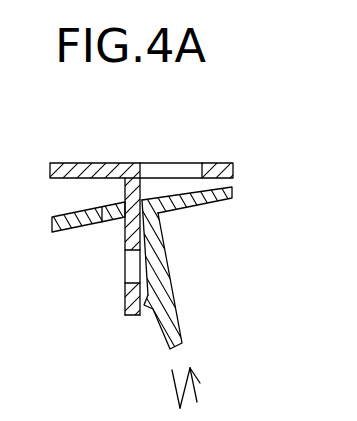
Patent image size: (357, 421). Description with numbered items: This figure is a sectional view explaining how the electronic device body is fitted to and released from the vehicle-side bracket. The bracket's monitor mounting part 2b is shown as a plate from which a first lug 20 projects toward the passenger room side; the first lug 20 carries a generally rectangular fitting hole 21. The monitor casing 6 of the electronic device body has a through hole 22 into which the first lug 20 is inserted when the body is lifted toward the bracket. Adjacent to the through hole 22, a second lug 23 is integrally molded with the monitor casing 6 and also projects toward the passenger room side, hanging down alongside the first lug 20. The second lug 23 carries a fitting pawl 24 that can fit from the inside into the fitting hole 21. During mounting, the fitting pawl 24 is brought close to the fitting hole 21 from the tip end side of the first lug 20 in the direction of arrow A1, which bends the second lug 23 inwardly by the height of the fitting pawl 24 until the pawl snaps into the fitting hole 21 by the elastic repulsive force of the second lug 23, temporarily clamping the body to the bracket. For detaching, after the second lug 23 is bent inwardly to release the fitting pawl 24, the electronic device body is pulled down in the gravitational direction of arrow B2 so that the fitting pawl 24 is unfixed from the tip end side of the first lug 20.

The monitor mounting part 2b is at (97, 163).
The first lug 20 is at (131, 243).
The fitting hole 21 is at (128, 275).
The through hole 22 is at (112, 210).
The monitor casing 6 is at (216, 197).
The second lug 23 is at (175, 312).
The fitting pawl 24 is at (146, 308).
The arrow B2 is at (172, 382).
The arrow A1 is at (196, 393).